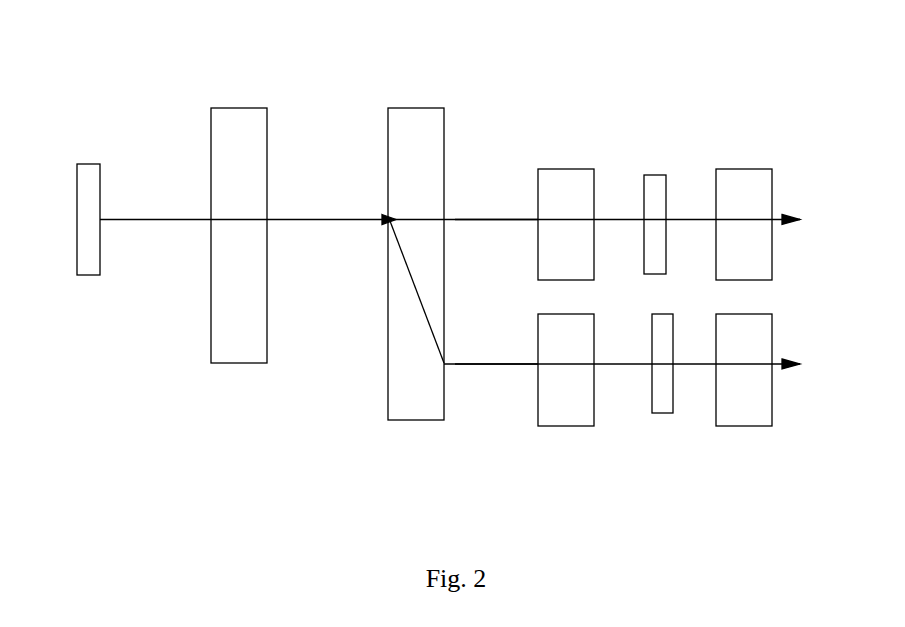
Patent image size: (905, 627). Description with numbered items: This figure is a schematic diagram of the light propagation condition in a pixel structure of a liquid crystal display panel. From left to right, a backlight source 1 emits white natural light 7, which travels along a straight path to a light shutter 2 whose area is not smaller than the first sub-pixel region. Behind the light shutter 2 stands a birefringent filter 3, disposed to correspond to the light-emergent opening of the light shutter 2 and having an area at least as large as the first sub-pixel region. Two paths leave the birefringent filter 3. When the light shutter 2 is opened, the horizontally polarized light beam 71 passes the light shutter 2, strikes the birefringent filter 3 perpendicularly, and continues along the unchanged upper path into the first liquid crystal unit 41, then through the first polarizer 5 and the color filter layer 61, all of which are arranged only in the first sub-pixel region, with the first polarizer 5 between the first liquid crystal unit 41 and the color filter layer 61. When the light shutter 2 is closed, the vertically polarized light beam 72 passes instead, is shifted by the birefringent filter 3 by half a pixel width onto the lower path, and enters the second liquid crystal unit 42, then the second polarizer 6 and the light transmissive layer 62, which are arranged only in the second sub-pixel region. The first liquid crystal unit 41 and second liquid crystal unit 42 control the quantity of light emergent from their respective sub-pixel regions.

The backlight source 1 is at (88, 163).
The light shutter 2 is at (233, 107).
The birefringent filter 3 is at (422, 107).
The first liquid crystal unit 41 is at (565, 175).
The second liquid crystal unit 42 is at (555, 426).
The first polarizer 5 is at (656, 175).
The second polarizer 6 is at (665, 406).
The color filter layer 61 is at (733, 168).
The light transmissive layer 62 is at (719, 427).
The white natural light 7 is at (188, 220).
The horizontally polarized light beam 71 is at (455, 220).
The vertically polarized light beam 72 is at (510, 364).